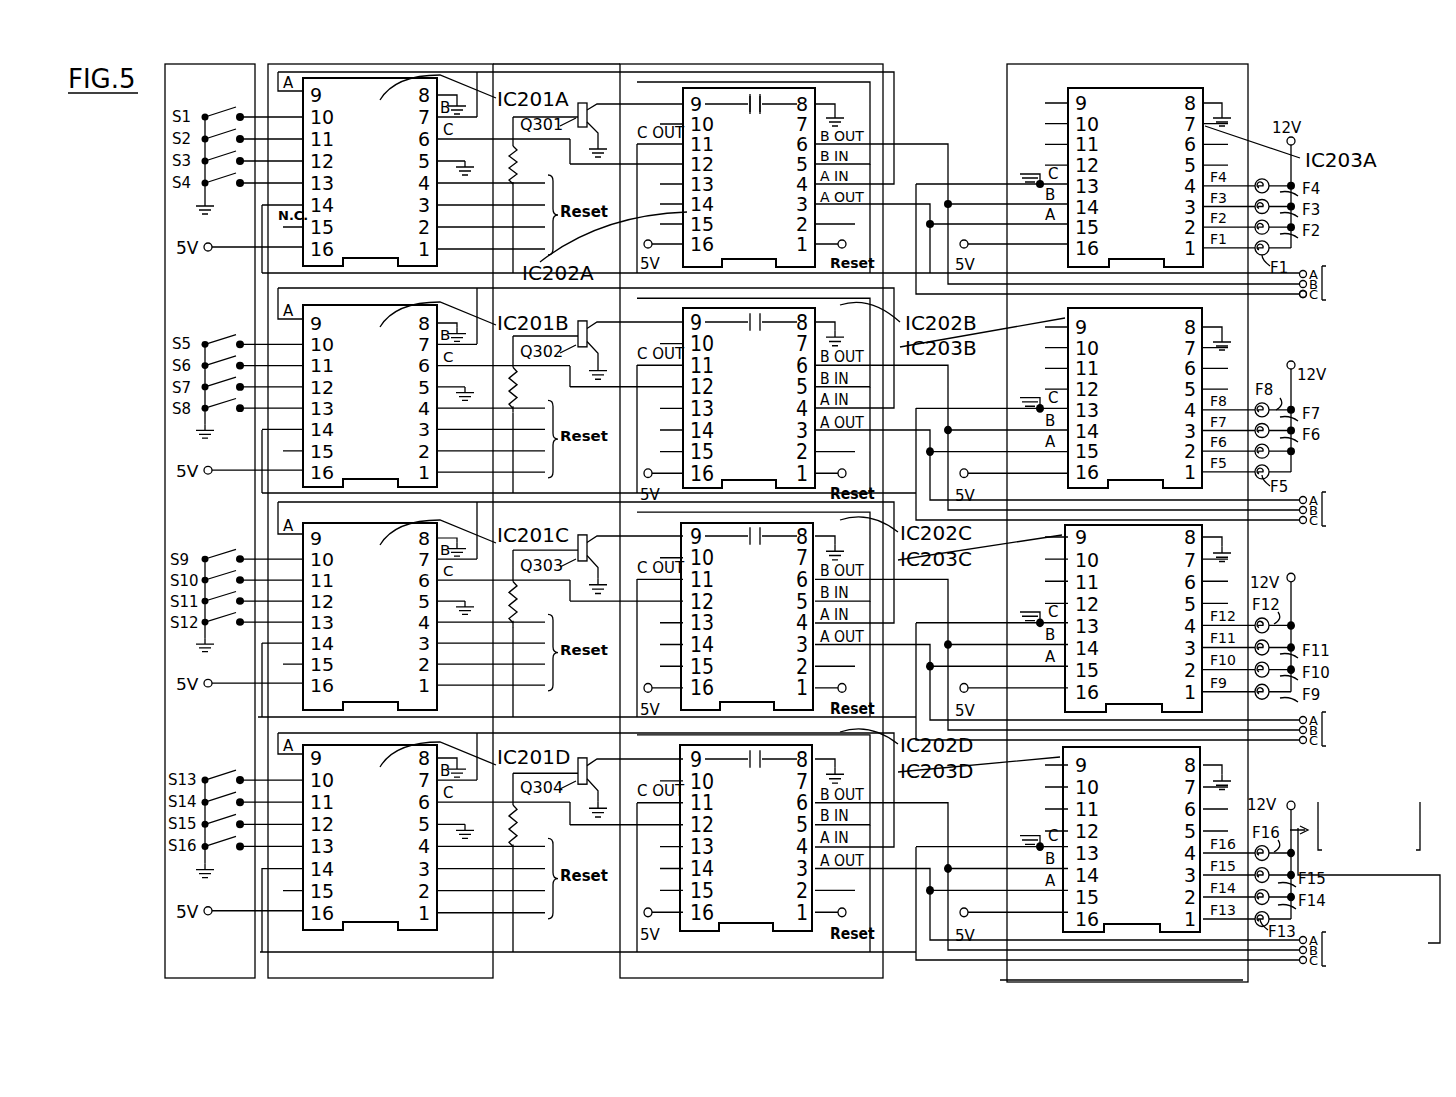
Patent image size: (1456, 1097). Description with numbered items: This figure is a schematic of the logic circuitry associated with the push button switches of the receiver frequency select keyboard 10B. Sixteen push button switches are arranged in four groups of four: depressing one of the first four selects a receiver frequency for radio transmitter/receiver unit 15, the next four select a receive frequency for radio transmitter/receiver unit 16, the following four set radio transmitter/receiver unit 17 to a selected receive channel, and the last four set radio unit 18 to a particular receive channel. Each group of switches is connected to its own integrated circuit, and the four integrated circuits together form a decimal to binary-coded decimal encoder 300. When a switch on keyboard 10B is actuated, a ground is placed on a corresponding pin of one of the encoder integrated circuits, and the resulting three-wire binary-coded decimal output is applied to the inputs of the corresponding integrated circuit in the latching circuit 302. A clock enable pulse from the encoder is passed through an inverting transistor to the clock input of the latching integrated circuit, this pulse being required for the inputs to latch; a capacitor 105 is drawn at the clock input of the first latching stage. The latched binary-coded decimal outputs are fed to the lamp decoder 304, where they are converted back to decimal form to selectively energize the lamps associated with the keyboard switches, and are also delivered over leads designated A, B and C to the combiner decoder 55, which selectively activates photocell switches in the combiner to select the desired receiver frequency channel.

The capacitor 105 is at (756, 113).
The decimal to binary-coded decimal encoder 300 is at (279, 521).
The latching circuit 302 is at (741, 521).
The lamp decoder 304 is at (1209, 523).
The receiver frequency select keyboard 10B is at (160, 521).
The combiner decoder 55 is at (1368, 291).
The radio transmitter/receiver unit 15 is at (1359, 333).
The radio transmitter/receiver unit 16 is at (1352, 534).
The radio transmitter/receiver unit 17 is at (1349, 745).
The radio unit 18 is at (1366, 885).